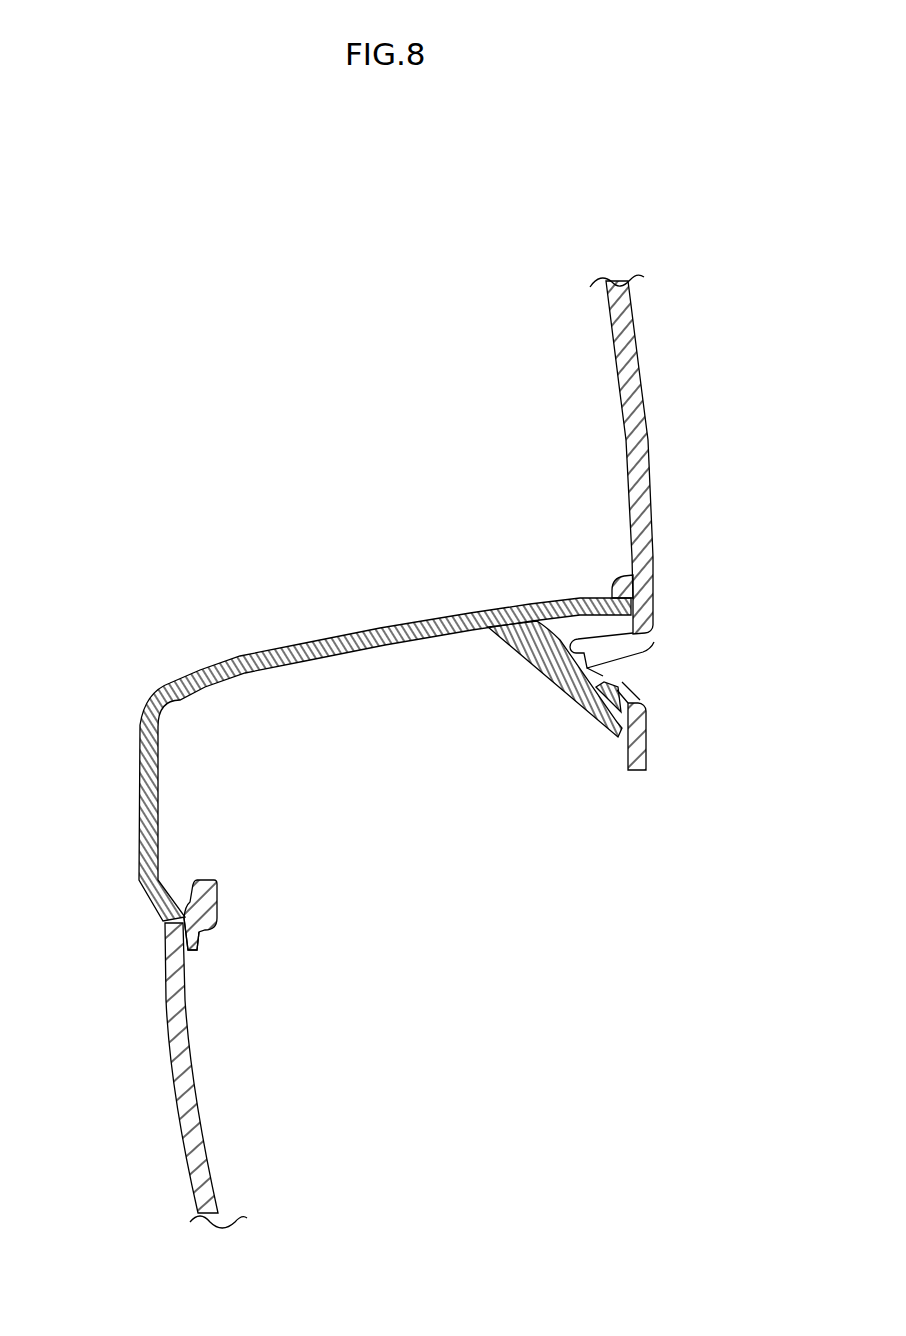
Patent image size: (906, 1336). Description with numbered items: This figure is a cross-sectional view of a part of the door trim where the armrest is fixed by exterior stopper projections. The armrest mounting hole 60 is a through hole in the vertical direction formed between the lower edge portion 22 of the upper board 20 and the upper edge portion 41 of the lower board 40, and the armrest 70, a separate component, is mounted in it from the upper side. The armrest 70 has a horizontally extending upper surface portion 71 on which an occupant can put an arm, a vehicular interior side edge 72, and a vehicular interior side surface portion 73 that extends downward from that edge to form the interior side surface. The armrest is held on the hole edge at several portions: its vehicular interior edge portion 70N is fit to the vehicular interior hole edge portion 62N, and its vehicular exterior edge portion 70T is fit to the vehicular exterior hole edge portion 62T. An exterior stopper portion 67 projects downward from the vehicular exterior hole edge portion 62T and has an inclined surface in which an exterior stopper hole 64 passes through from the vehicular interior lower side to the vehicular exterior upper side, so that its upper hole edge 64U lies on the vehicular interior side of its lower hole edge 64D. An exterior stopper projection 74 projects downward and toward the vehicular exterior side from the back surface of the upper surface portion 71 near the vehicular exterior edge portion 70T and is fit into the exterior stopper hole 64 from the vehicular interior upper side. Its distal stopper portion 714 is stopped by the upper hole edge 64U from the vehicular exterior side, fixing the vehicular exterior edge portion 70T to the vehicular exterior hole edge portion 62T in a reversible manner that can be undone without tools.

The upper board 20 is at (617, 342).
The lower edge portion 22 is at (633, 530).
The lower board 40 is at (195, 1195).
The upper edge portion 41 is at (165, 983).
The armrest mounting hole 60 is at (208, 878).
The vehicular exterior hole edge portion 62T is at (610, 596).
The vehicular interior hole edge portion 62N is at (193, 930).
The exterior stopper hole 64 is at (682, 665).
The upper hole edge 64U is at (637, 638).
The lower hole edge 64D is at (634, 698).
The exterior stopper portion 67 is at (643, 757).
The armrest 70 is at (390, 701).
The vehicular exterior edge portion 70T is at (590, 597).
The vehicular interior edge portion 70N is at (140, 833).
The upper surface portion 71 is at (383, 629).
The vehicular interior side edge 72 is at (155, 692).
The vehicular interior side surface portion 73 is at (140, 767).
The exterior stopper projection 74 is at (533, 658).
The stopper portion 714 is at (612, 683).